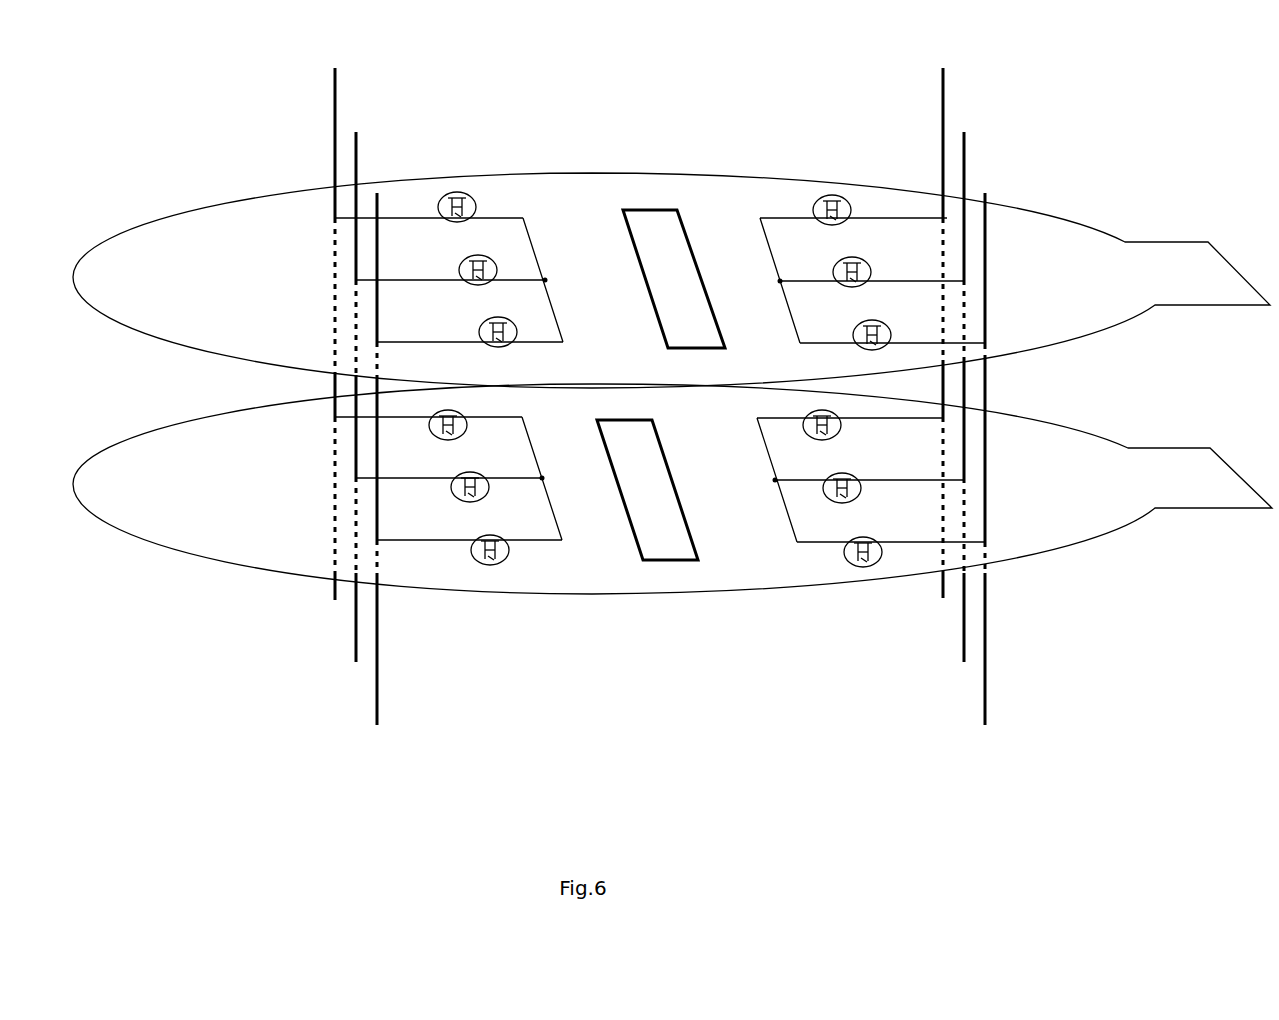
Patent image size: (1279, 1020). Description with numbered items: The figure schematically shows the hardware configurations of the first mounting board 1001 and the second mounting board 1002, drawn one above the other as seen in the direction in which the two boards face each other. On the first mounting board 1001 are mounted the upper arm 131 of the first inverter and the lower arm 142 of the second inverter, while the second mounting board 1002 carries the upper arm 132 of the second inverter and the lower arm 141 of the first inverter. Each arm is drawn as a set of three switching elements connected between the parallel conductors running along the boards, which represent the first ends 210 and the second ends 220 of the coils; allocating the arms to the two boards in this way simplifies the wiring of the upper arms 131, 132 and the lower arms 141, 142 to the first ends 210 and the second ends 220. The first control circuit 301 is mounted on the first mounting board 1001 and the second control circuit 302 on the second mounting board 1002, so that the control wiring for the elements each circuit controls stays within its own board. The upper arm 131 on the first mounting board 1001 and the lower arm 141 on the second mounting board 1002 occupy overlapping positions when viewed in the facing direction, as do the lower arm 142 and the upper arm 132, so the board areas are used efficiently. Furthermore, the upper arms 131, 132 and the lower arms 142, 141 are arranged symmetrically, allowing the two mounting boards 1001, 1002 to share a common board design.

The first mounting board 1001 is at (192, 247).
The second mounting board 1002 is at (185, 505).
The first ends of the coils 210 is at (340, 184).
The second ends of the coils 220 is at (985, 200).
The upper arm of the first inverter 131 is at (493, 230).
The upper arm of the second inverter 132 is at (822, 547).
The lower arm of the first inverter 141 is at (452, 543).
The lower arm of the second inverter 142 is at (795, 232).
The first control circuit 301 is at (657, 225).
The second control circuit 302 is at (665, 543).